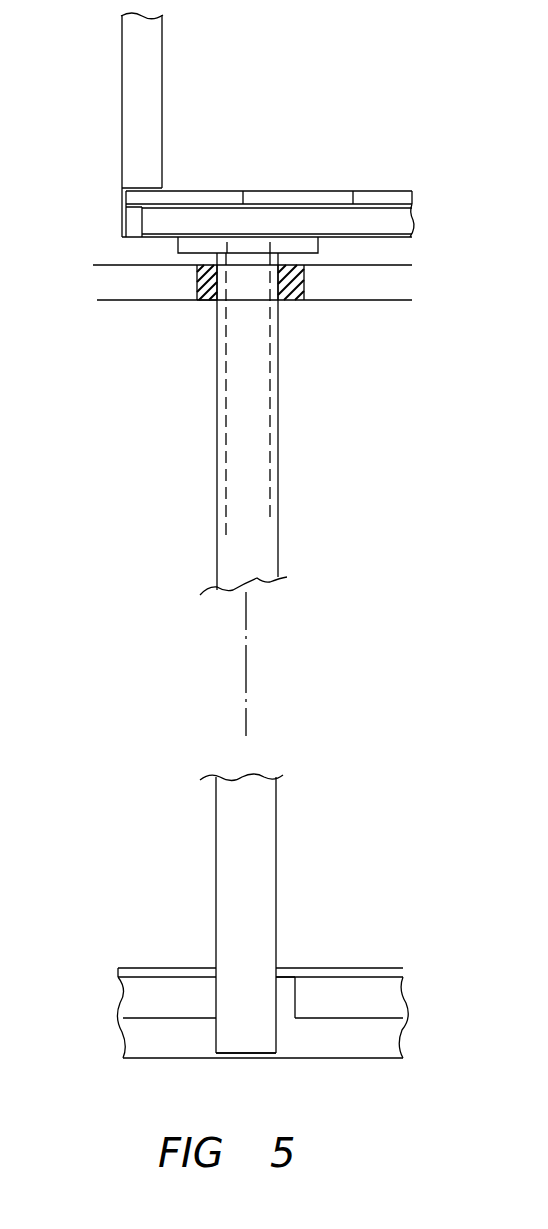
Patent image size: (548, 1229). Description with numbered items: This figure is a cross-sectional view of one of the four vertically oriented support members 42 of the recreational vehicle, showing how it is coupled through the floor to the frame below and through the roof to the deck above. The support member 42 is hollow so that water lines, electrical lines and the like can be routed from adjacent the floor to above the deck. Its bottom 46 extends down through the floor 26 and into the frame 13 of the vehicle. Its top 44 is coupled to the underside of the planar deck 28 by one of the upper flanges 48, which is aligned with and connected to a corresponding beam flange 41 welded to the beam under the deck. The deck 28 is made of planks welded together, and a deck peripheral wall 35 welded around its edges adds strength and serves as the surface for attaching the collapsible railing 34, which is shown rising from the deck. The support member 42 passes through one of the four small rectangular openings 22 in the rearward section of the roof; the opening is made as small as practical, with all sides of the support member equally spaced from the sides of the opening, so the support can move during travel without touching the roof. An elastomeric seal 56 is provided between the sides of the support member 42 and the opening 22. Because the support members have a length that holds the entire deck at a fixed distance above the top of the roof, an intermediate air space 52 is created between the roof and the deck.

The collapsible railing 34 is at (127, 108).
The deck peripheral wall 35 is at (120, 220).
The planar deck 28 is at (385, 190).
The beam flanges 41 is at (263, 235).
The top of support member 44 is at (178, 240).
The upper flanges 48 is at (320, 247).
The intermediate air space 52 is at (197, 260).
The elastomeric seal 56 is at (203, 298).
The small rectangular openings 22 is at (305, 285).
The support member 42 is at (278, 515).
The floor 26 is at (342, 968).
The frame 13 is at (295, 1002).
The bottom of support member 46 is at (247, 1055).